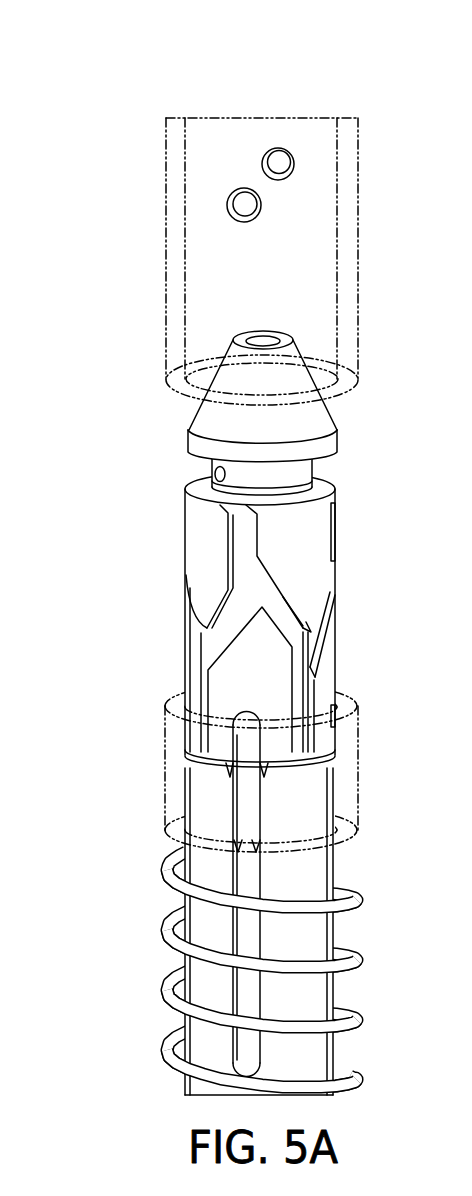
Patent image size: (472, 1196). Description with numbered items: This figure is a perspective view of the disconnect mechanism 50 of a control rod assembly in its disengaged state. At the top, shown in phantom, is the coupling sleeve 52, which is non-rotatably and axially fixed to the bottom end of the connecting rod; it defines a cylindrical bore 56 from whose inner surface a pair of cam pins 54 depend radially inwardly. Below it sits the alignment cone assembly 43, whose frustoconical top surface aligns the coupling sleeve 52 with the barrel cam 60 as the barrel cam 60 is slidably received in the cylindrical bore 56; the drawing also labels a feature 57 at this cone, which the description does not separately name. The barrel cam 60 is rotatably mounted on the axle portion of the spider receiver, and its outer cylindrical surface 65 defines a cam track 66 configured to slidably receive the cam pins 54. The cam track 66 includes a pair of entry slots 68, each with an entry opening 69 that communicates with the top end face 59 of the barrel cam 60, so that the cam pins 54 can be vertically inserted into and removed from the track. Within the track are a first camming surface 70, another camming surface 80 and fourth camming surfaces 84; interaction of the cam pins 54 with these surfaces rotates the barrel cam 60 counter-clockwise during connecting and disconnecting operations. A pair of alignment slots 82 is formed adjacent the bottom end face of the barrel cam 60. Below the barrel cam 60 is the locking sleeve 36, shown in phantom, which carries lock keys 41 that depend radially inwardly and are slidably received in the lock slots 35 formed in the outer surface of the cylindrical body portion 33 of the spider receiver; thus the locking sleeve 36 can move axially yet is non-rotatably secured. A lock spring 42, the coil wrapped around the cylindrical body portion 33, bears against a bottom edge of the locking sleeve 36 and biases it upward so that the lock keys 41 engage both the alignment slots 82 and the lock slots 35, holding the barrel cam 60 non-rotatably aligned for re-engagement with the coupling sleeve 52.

The cylindrical body portion 33 is at (293, 937).
The lock slots 35 is at (248, 937).
The locking sleeve 36 is at (146, 794).
The lock key 41 is at (245, 810).
The lock spring 42 is at (163, 992).
The alignment cone assembly 43 is at (341, 843).
The disconnect mechanism 50 is at (244, 410).
The coupling sleeve 52 is at (203, 216).
The cam pins 54 is at (241, 188).
The cylindrical bore 56 is at (185, 163).
The conical tip 57 is at (345, 394).
The top end face 59 is at (323, 487).
The barrel cam 60 is at (153, 607).
The outer cylindrical surface 65 is at (257, 672).
The cam track 66 is at (286, 570).
The entry slots 68 is at (242, 541).
The entry opening 69 is at (250, 507).
The first camming surface 70 is at (237, 643).
The first camming surface 80 is at (322, 645).
The alignment slots 82 is at (247, 718).
The fourth camming surfaces 84 is at (284, 620).